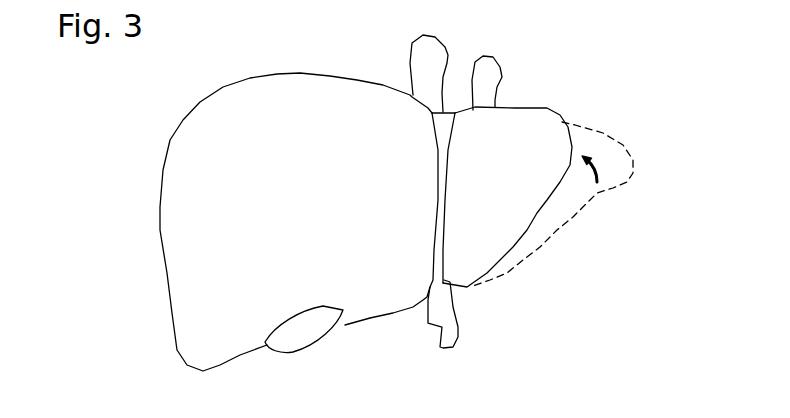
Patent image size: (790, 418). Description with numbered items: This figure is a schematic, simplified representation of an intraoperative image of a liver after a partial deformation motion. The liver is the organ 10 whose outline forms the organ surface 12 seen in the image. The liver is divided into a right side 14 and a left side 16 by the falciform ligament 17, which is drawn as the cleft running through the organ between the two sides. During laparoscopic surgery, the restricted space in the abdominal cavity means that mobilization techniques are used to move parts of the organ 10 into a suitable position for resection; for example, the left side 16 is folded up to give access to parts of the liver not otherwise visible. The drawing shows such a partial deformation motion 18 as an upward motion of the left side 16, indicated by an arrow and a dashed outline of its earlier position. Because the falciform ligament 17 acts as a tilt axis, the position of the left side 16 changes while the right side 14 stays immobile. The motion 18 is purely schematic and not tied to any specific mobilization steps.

The organ 10 is at (576, 70).
The organ surface 12 is at (187, 178).
The right side 14 is at (233, 255).
The left side 16 is at (512, 212).
The falciform ligament 17 is at (437, 213).
The partial deformation motion 18 is at (603, 167).